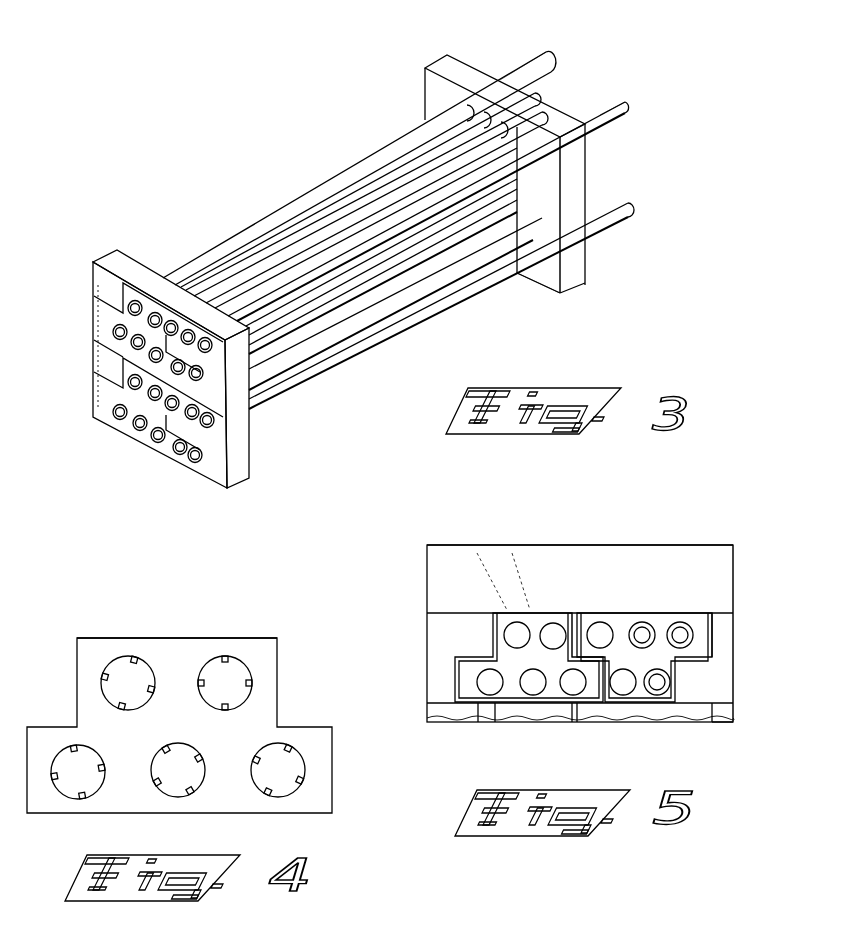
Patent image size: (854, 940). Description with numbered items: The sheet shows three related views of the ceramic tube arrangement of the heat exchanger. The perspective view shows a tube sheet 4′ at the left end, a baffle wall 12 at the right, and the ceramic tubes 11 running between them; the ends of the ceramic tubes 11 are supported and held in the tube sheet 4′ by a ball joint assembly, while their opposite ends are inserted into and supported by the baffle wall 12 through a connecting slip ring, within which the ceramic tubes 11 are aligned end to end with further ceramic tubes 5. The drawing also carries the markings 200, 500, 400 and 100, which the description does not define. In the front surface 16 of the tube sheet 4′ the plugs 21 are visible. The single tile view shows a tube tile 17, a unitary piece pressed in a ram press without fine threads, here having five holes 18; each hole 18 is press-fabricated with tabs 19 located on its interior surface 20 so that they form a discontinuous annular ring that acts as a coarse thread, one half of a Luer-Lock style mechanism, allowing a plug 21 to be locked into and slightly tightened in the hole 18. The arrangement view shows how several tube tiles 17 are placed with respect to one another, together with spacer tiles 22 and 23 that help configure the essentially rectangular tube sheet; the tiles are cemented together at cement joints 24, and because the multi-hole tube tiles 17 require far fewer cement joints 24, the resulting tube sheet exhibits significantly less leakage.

In FIG. 3, the tube sheet 4′ is at (124, 270).
In FIG. 5, the tube sheet 4′ is at (743, 560).
In FIG. 3, the comb plates 200 is at (280, 405).
In FIG. 3, the ceramic tubes 11 is at (326, 183).
In FIG. 3, the baffle wall 12 is at (440, 65).
In FIG. 3, the bar ends 500 is at (533, 62).
In FIG. 3, the ceramic tubes 5 is at (620, 200).
In FIG. 3, the plate thickness dimension 400 is at (522, 273).
In FIG. 3, the plate face dimension 100 is at (517, 290).
In FIG. 4, the tube tile 17 is at (338, 708).
In FIG. 5, the tube tile 17 is at (508, 542).
In FIG. 4, the holes 18 is at (232, 678).
In FIG. 5, the holes 18 is at (467, 545).
In FIG. 4, the tabs 19 is at (115, 689).
In FIG. 4, the interior surface 20 is at (128, 652).
In FIG. 5, the front surface 16 is at (677, 617).
In FIG. 5, the plugs 21 is at (622, 610).
In FIG. 5, the spacer tile 22 is at (720, 610).
In FIG. 5, the spacer tile 23 is at (718, 725).
In FIG. 5, the cement joints 24 is at (590, 613).